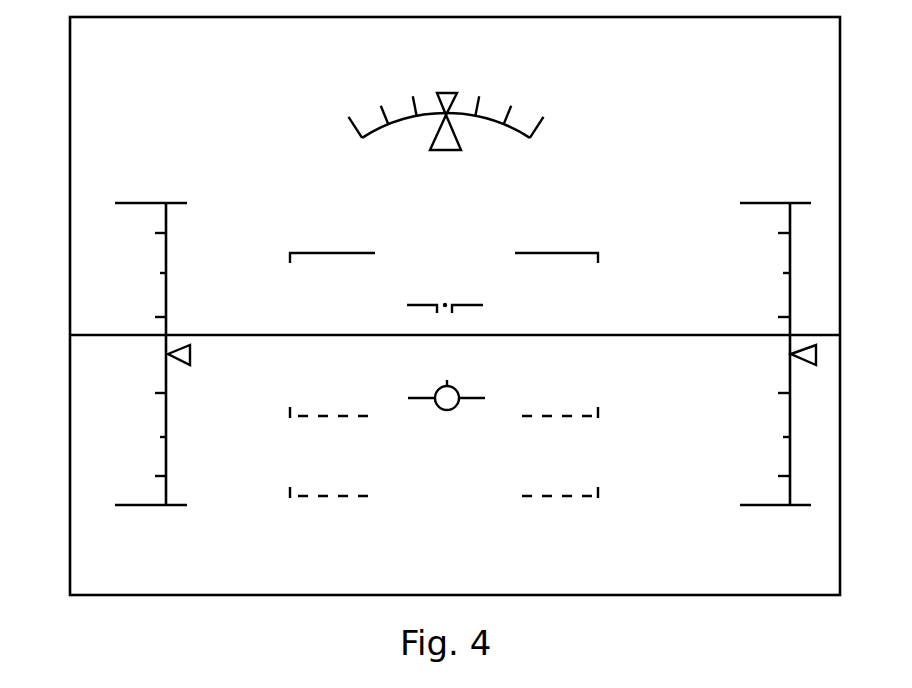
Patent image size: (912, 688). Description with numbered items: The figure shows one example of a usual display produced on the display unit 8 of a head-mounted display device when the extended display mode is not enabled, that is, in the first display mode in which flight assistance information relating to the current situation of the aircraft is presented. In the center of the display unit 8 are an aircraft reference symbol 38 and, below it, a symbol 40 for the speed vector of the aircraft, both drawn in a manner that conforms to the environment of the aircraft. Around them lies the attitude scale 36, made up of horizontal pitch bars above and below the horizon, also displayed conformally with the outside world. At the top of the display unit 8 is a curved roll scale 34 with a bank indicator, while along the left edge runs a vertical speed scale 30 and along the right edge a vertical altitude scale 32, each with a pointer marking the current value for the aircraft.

The display unit 8 is at (70, 138).
The speed scale 30 is at (188, 175).
The altitude scale 32 is at (729, 176).
The roll scale 34 is at (565, 111).
The attitude scale 36 is at (570, 230).
The aircraft reference symbol 38 is at (467, 286).
The symbol for speed vector of the aircraft 40 is at (482, 385).